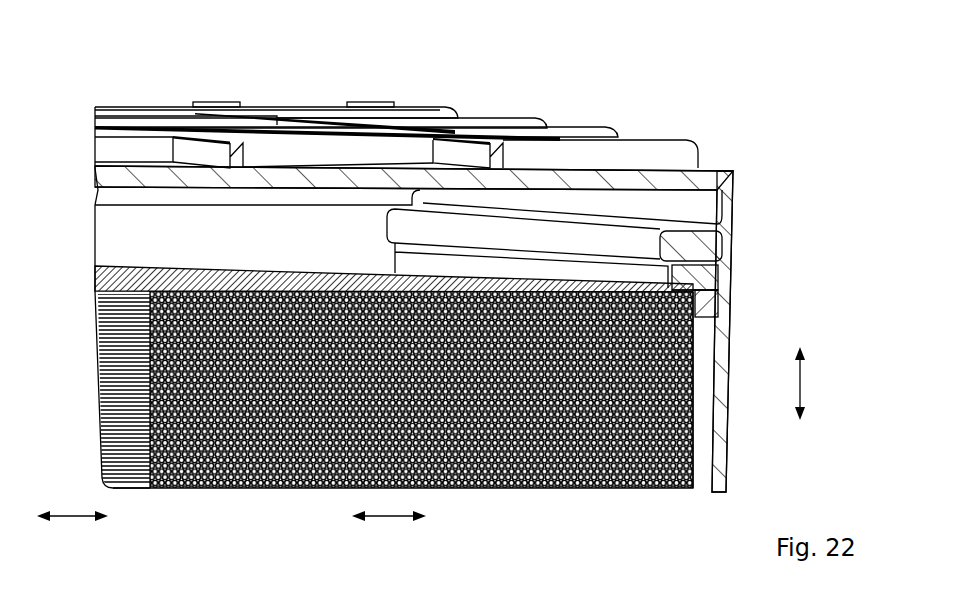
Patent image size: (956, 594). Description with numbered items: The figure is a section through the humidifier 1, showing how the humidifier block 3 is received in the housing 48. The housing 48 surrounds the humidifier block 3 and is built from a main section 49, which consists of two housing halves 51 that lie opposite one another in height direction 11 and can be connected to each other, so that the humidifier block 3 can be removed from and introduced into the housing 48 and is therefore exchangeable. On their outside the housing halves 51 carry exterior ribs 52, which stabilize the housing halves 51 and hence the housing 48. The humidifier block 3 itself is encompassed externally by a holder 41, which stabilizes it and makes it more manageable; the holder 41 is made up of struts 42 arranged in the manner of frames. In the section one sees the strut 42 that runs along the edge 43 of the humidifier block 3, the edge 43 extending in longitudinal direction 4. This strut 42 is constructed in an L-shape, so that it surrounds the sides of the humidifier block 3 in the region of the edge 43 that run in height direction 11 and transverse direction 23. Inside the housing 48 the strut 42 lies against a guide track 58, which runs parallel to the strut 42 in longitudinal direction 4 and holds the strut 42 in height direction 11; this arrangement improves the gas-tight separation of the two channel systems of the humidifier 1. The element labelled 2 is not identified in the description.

The humidifier 1 is at (770, 158).
The cell body 2 is at (690, 393).
The humidifier block 3 is at (706, 458).
The longitudinal direction 4 is at (73, 515).
The height direction 11 is at (803, 383).
The transverse direction 23 is at (390, 518).
The holder 41 is at (733, 297).
The strut 42 is at (708, 307).
The edge 43 is at (690, 288).
The housing 48 is at (311, 90).
The main section 49 is at (566, 124).
The housing half 51 is at (668, 176).
The exterior rib 52 is at (628, 153).
The guide track 58 is at (688, 247).